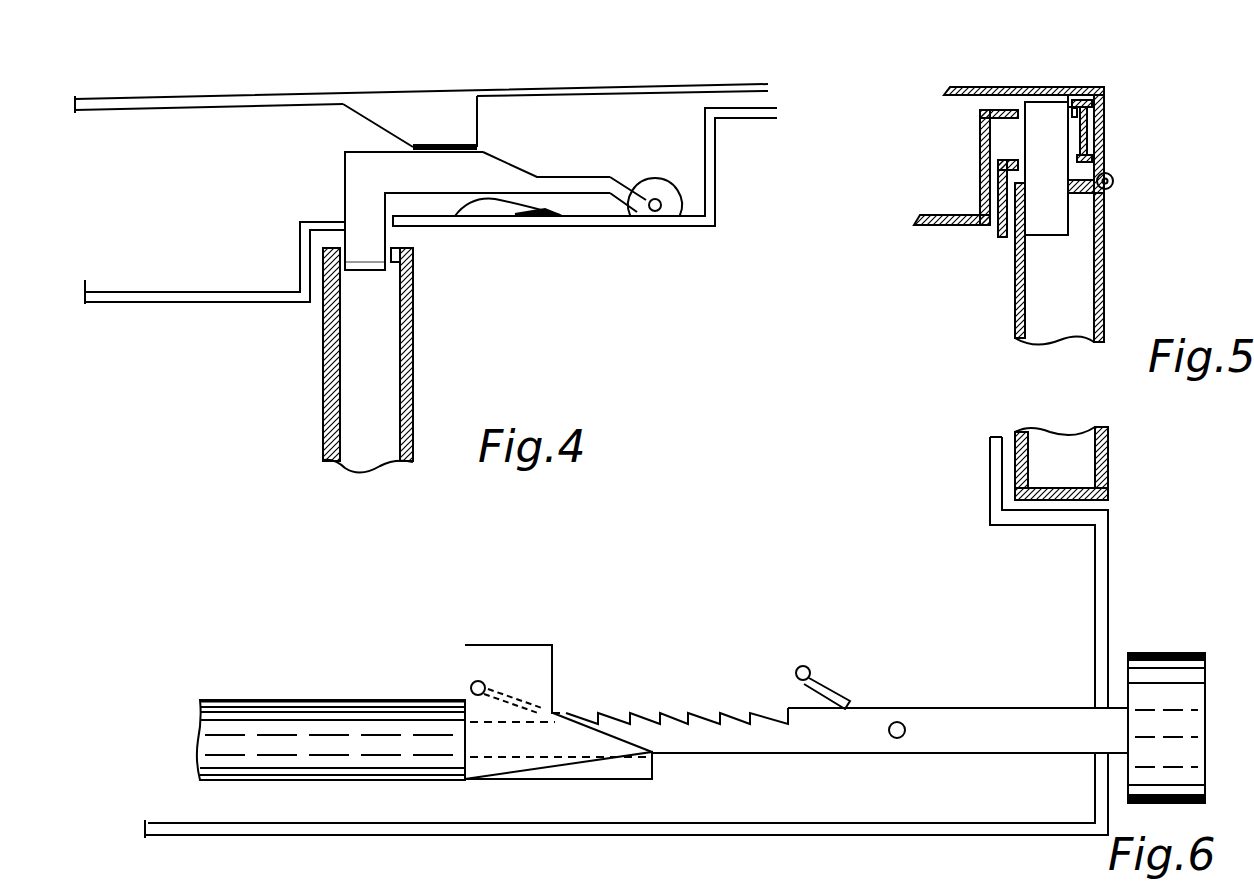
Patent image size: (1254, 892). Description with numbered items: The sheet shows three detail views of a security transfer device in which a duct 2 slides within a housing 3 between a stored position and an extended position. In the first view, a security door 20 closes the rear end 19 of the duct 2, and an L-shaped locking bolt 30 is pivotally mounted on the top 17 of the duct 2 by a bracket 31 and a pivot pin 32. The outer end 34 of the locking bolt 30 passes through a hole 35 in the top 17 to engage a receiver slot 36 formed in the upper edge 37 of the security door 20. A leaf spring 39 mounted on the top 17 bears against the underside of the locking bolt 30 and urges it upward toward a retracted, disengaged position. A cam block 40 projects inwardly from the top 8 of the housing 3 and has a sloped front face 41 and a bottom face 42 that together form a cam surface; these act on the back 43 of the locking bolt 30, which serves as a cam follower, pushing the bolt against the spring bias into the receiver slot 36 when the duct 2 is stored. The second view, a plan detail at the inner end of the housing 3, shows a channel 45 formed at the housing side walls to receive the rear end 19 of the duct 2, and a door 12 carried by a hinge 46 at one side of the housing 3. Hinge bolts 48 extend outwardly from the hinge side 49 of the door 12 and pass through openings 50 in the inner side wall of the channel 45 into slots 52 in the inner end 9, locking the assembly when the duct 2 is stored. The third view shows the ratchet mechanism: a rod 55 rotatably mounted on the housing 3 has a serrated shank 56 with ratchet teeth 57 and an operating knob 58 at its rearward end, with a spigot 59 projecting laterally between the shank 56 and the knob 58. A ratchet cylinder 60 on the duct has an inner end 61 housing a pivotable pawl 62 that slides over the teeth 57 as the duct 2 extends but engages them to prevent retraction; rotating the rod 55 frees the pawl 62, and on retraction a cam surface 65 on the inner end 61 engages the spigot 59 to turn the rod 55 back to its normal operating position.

In FIG. 5, the duct 2 is at (932, 227).
In FIG. 4, the housing 3 is at (267, 97).
In FIG. 5, the housing 3 is at (985, 87).
In FIG. 6, the housing 3 is at (1110, 537).
In FIG. 4, the top 8 is at (428, 98).
In FIG. 5, the inner end 9 is at (1104, 127).
In FIG. 5, the door 12 is at (1105, 308).
In FIG. 6, the door 12 is at (1110, 454).
In FIG. 4, the top 17 is at (137, 290).
In FIG. 4, the rear end 19 is at (692, 228).
In FIG. 5, the rear end 19 is at (1088, 138).
In FIG. 4, the security door 20 is at (417, 388).
In FIG. 4, the locking bolt 30 is at (490, 172).
In FIG. 4, the bracket 31 is at (687, 192).
In FIG. 4, the pivot pin 32 is at (662, 200).
In FIG. 4, the outer end 34 is at (358, 260).
In FIG. 4, the hole 35 is at (343, 218).
In FIG. 4, the receiver slot 36 is at (393, 265).
In FIG. 4, the upper edge 37 is at (408, 252).
In FIG. 4, the leaf spring 39 is at (567, 220).
In FIG. 4, the cam block 40 is at (397, 122).
In FIG. 4, the sloped front face 41 is at (363, 120).
In FIG. 4, the bottom face 42 is at (447, 143).
In FIG. 4, the back 43 is at (500, 170).
In FIG. 5, the channel 45 is at (1106, 92).
In FIG. 5, the hinge 46 is at (1112, 188).
In FIG. 5, the hinge bolts 48 is at (1018, 275).
In FIG. 5, the hinge side 49 is at (1043, 222).
In FIG. 5, the openings 50 is at (1017, 160).
In FIG. 5, the slots 52 is at (1073, 100).
In FIG. 6, the rod 55 is at (1022, 718).
In FIG. 6, the serrated shank 56 is at (728, 732).
In FIG. 6, the ratchet teeth 57 is at (678, 717).
In FIG. 6, the operating knob 58 is at (1170, 653).
In FIG. 6, the spigot 59 is at (900, 720).
In FIG. 6, the ratchet cylinder 60 is at (327, 698).
In FIG. 6, the inner end 61 is at (540, 672).
In FIG. 6, the pawl 62 is at (500, 690).
In FIG. 6, the cam surface 65 is at (605, 718).